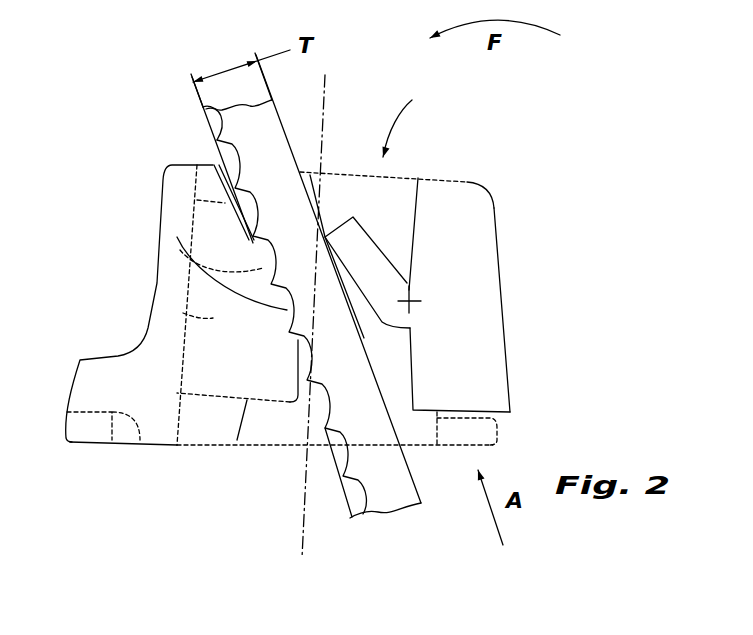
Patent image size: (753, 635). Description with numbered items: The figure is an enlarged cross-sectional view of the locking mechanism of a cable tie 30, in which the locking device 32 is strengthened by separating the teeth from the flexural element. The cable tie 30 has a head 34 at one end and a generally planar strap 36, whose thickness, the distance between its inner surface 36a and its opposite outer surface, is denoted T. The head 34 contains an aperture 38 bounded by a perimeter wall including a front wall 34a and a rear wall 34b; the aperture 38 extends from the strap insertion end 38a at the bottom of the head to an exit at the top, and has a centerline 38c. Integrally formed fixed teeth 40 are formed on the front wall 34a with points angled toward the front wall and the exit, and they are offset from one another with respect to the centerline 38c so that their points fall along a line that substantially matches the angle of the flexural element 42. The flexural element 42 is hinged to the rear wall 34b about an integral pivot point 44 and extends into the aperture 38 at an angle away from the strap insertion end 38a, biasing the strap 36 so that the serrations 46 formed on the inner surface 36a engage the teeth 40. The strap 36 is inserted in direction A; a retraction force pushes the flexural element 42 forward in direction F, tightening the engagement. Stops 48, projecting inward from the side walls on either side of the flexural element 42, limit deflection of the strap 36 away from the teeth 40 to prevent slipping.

The cable tie 30 is at (535, 207).
The locking device 32 is at (407, 118).
The head 34 is at (485, 393).
The front wall 34a is at (183, 313).
The rear wall 34b is at (480, 260).
The strap 36 is at (277, 173).
The inner surface of the strap 36a is at (177, 447).
The aperture 38 is at (257, 423).
The strap insertion end 38a is at (257, 447).
The centerline of the aperture 38c is at (303, 533).
The fixed teeth 40 is at (177, 237).
The flexural element 42 is at (363, 262).
The pivot point 44 is at (421, 301).
The serrations 46 is at (332, 418).
The stops 48 is at (336, 197).